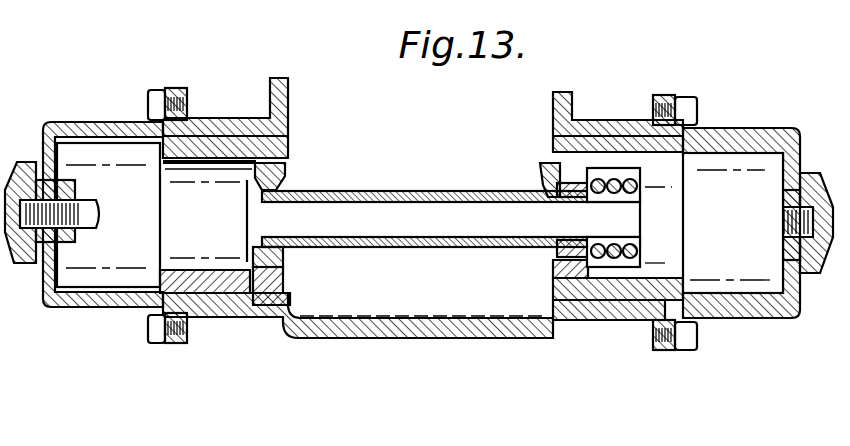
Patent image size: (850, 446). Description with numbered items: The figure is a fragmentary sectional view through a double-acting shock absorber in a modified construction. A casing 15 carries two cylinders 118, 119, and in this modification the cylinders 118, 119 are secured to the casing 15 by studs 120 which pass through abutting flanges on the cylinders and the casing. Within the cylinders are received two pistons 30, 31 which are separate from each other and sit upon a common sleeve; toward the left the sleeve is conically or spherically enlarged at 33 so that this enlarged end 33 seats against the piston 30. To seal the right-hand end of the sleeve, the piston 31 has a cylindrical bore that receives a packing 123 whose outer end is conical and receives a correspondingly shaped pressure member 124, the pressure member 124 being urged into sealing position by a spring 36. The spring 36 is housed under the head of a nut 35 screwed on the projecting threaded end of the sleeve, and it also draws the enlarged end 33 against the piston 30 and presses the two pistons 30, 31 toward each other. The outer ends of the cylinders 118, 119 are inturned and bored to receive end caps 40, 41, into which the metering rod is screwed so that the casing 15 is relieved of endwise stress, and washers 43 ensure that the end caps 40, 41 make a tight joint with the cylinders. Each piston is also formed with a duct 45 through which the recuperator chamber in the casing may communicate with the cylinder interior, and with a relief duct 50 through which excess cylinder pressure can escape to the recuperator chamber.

The casing 15 is at (248, 305).
The piston 30 is at (185, 282).
The piston 31 is at (603, 292).
The enlarged end of sleeve 33 is at (250, 244).
The nut 35 is at (635, 268).
The spring 36 is at (613, 180).
The end cap 40 is at (26, 258).
The end cap 41 is at (823, 273).
The washer 43 is at (38, 170).
The duct 45 is at (283, 265).
The relief duct 50 is at (278, 170).
The cylinder 118 is at (100, 296).
The cylinder 119 is at (775, 300).
The stud 120 is at (147, 103).
The packing 123 is at (557, 250).
The pressure member 124 is at (592, 180).